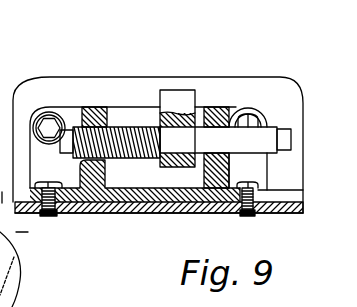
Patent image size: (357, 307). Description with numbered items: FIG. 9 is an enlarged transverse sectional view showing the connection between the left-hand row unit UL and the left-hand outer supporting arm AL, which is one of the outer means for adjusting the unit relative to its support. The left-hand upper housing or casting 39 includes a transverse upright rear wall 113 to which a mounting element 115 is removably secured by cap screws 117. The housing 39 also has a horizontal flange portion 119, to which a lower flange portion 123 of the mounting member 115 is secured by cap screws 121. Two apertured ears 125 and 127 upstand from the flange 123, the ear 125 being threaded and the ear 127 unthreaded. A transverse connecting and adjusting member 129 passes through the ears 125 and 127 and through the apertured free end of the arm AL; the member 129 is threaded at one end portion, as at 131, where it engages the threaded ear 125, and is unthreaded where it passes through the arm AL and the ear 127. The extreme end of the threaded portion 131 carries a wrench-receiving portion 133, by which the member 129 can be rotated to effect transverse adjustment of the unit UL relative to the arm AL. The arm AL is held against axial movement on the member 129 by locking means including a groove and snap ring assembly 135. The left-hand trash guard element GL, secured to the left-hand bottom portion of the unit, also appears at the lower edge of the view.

The transverse upright rear wall 113 is at (113, 77).
The mounting element 115 is at (62, 108).
The cap screws 117 is at (50, 120).
The horizontal flange portion 119 is at (137, 213).
The cap screws 121 is at (56, 217).
The lower flange portion 123 is at (149, 183).
The threaded apertured ear 125 is at (95, 107).
The unthreaded apertured ear 127 is at (216, 106).
The transverse connecting and adjusting member 129 is at (133, 122).
The threaded portion 131 is at (120, 127).
The wrench-receiving portion 133 is at (66, 146).
The groove and snap ring assembly 135 is at (197, 128).
The left-hand upper housing 39 is at (186, 213).
The left-hand outer supporting arm AL is at (185, 90).
The left-hand row unit UL is at (116, 213).
The left-hand trash guard element GL is at (32, 235).